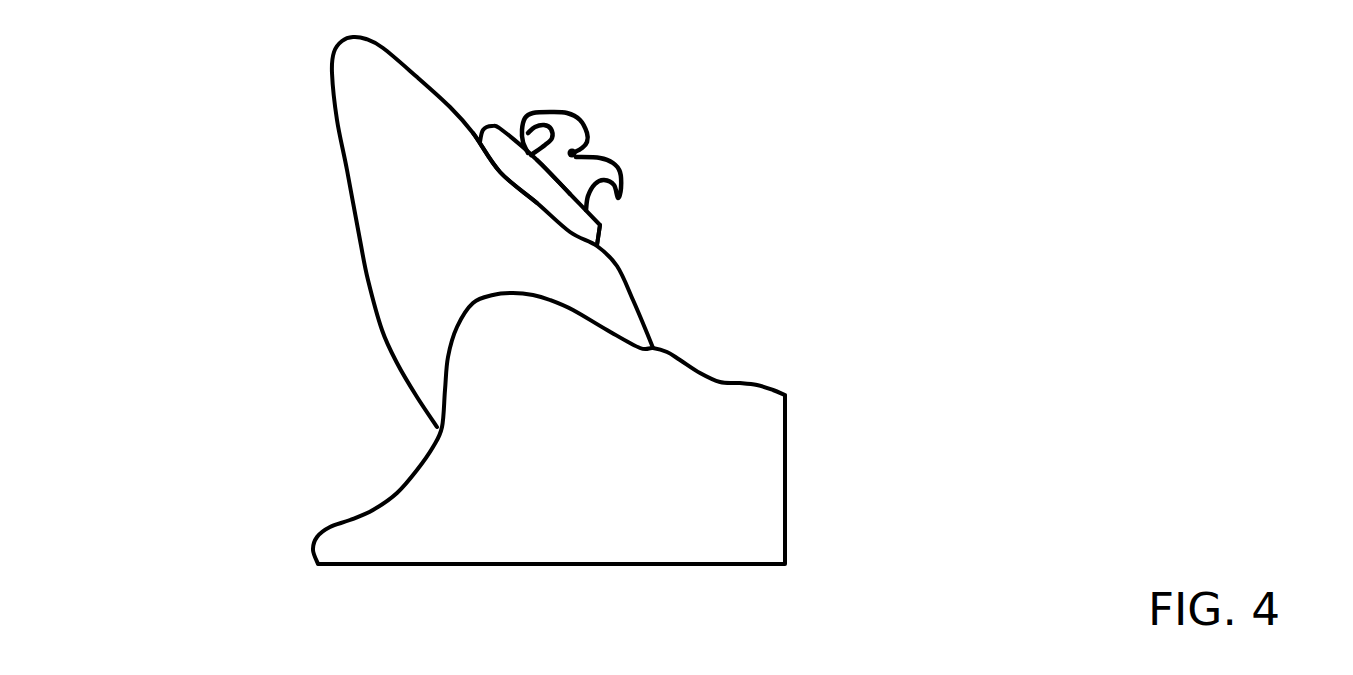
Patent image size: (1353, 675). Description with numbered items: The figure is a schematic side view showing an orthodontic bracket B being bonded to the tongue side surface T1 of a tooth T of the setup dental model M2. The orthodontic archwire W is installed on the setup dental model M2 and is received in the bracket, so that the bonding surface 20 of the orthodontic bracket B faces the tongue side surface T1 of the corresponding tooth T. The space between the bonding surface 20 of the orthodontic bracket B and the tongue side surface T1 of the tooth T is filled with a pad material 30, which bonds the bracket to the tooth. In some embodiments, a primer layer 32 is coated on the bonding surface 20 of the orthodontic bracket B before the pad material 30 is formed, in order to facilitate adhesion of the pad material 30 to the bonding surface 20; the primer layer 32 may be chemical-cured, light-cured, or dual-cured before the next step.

The tooth T is at (437, 247).
The tongue side surface T1 is at (500, 176).
The setup dental model M2 is at (416, 436).
The pad material 30 is at (487, 127).
The primer layer 32 is at (603, 230).
The bonding surface 20 is at (553, 182).
The orthodontic bracket B is at (545, 103).
The orthodontic archwire W is at (577, 153).